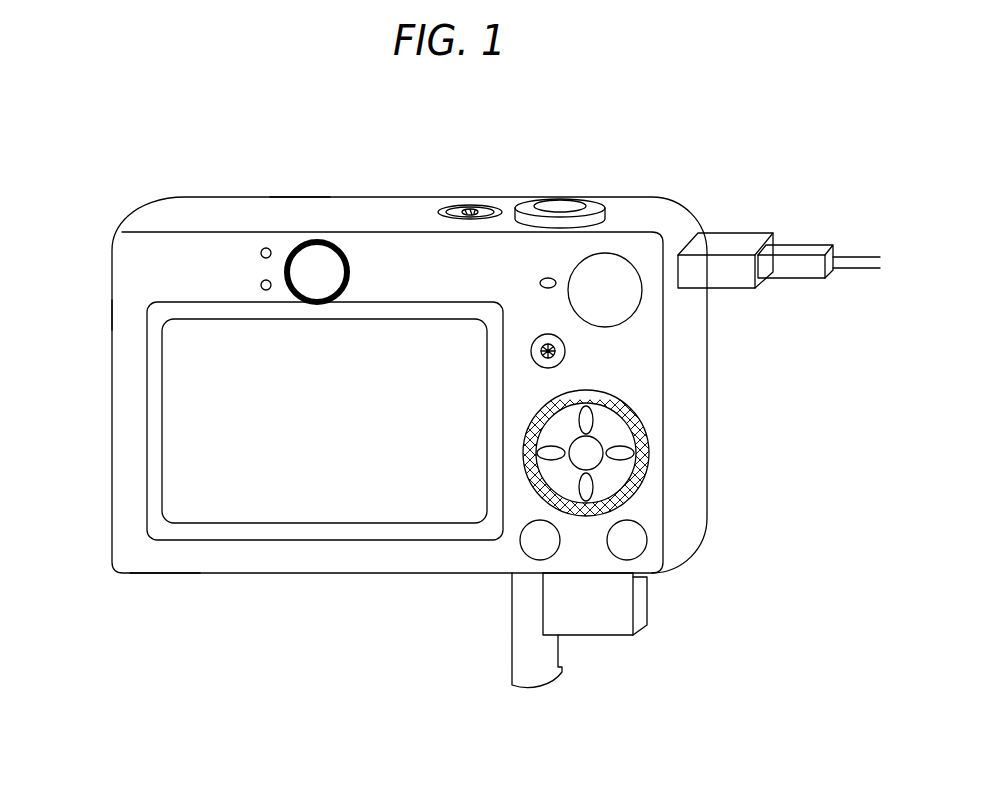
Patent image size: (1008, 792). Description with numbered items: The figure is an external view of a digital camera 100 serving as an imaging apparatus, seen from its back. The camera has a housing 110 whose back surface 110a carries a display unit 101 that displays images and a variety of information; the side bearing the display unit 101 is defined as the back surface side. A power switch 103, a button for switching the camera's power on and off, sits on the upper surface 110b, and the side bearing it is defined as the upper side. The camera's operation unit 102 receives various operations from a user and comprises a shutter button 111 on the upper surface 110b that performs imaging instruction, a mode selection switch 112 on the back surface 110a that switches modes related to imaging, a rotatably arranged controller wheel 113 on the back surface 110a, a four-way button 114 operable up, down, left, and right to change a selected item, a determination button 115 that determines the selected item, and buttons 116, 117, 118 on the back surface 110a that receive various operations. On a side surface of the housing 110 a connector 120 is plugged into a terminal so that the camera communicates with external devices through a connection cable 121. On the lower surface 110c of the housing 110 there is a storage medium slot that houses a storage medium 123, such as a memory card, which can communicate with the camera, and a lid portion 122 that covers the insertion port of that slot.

The digital camera 100 is at (694, 108).
The display unit 101 is at (220, 502).
The operation unit 102 is at (626, 380).
The power switch 103 is at (465, 203).
The housing 110 is at (203, 196).
The back surface 110a is at (122, 304).
The upper surface 110b is at (293, 215).
The lower surface 110c is at (157, 578).
The shutter button 111 is at (556, 199).
The mode selection switch 112 is at (617, 267).
The controller wheel 113 is at (642, 487).
The four-way button 114 is at (628, 407).
The determination button 115 is at (602, 445).
The button 116 is at (565, 351).
The button 117 is at (643, 548).
The button 118 is at (522, 548).
The connector 120 is at (745, 246).
The connection cable 121 is at (851, 255).
The lid portion 122 is at (537, 690).
The storage medium 123 is at (610, 638).